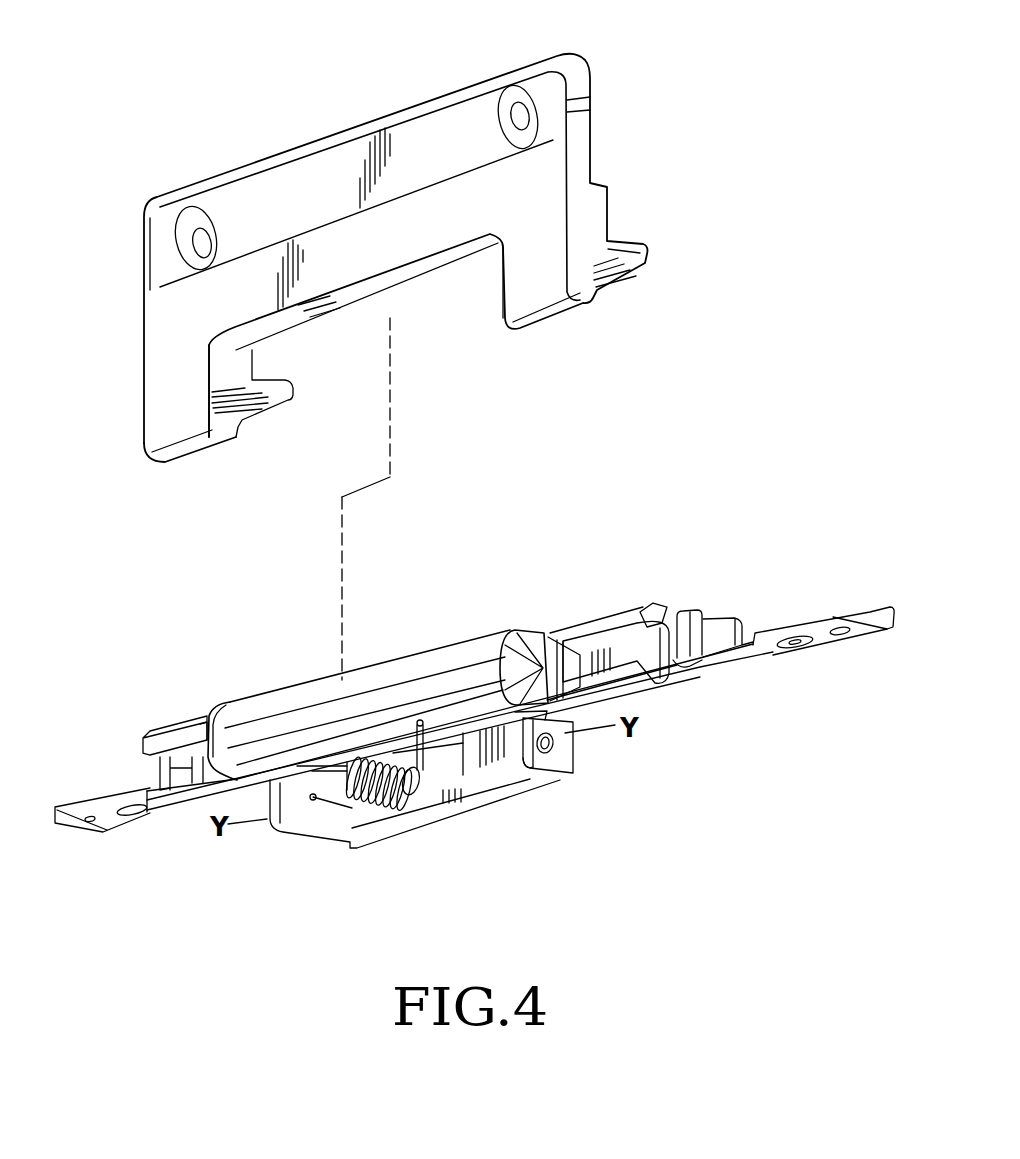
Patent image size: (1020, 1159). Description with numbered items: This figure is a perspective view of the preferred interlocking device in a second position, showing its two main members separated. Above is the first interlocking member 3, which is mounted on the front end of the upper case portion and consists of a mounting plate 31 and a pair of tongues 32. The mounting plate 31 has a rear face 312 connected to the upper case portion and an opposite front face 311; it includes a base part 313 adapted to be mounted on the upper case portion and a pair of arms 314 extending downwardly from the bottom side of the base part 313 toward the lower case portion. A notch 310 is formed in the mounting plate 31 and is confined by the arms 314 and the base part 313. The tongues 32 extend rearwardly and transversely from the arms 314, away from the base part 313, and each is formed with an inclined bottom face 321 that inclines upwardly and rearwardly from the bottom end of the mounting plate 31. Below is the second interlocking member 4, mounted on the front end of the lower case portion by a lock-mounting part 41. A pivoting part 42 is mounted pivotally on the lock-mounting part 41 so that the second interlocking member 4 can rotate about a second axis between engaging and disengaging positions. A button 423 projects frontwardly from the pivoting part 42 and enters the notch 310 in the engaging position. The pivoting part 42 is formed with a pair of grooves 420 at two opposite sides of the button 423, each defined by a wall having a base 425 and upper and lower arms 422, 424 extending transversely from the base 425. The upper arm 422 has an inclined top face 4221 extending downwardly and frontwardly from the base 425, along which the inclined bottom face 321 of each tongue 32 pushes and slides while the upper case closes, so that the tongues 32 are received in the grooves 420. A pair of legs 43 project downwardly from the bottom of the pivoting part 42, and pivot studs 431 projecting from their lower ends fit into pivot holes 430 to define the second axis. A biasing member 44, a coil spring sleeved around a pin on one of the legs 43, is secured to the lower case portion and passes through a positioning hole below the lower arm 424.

The first interlocking member 3 is at (178, 138).
The mounting plate 31 is at (145, 325).
The tongues 32 is at (263, 383).
The notch 310 is at (373, 337).
The front face 311 is at (417, 228).
The rear face 312 is at (444, 88).
The base part 313 is at (313, 185).
The arms 314 is at (168, 393).
The inclined bottom faces 321 is at (265, 420).
The second interlocking member 4 is at (690, 528).
The lock-mounting part 41 is at (827, 643).
The pivoting part 42 is at (565, 627).
The grooves 420 is at (160, 777).
The upper arm 422 is at (157, 740).
The inclined top face 4221 is at (190, 720).
The button 423 is at (307, 717).
The lower arm 424 is at (203, 805).
The base 425 is at (677, 662).
The legs 43 is at (552, 765).
The pivot hole 430 is at (545, 766).
The pivot studs 431 is at (555, 743).
The biasing member 44 is at (383, 803).